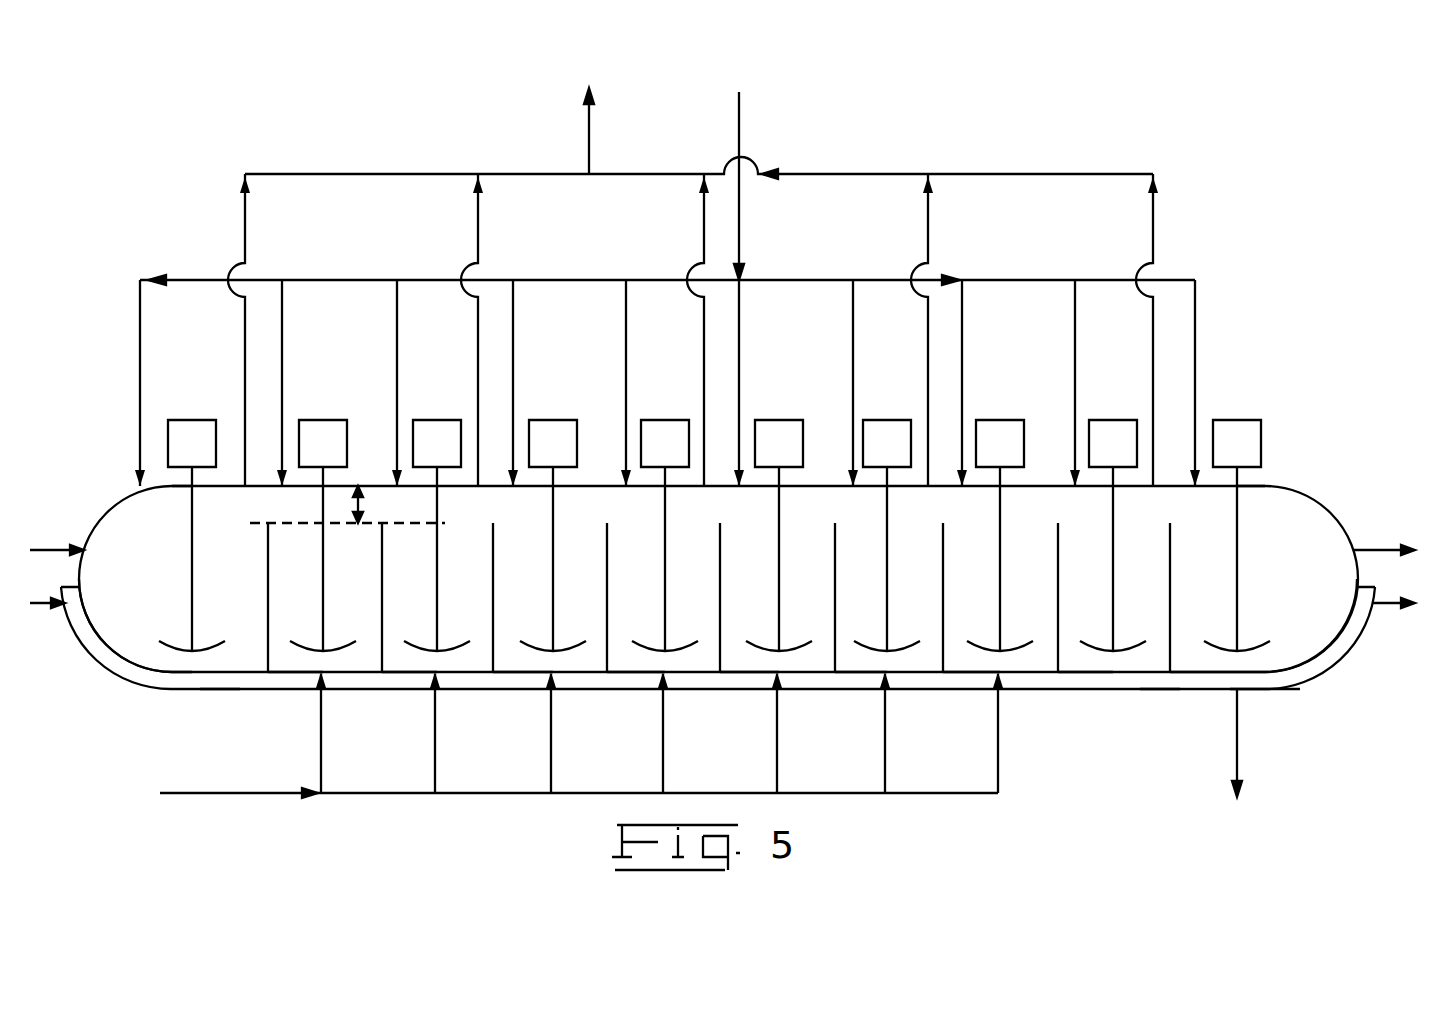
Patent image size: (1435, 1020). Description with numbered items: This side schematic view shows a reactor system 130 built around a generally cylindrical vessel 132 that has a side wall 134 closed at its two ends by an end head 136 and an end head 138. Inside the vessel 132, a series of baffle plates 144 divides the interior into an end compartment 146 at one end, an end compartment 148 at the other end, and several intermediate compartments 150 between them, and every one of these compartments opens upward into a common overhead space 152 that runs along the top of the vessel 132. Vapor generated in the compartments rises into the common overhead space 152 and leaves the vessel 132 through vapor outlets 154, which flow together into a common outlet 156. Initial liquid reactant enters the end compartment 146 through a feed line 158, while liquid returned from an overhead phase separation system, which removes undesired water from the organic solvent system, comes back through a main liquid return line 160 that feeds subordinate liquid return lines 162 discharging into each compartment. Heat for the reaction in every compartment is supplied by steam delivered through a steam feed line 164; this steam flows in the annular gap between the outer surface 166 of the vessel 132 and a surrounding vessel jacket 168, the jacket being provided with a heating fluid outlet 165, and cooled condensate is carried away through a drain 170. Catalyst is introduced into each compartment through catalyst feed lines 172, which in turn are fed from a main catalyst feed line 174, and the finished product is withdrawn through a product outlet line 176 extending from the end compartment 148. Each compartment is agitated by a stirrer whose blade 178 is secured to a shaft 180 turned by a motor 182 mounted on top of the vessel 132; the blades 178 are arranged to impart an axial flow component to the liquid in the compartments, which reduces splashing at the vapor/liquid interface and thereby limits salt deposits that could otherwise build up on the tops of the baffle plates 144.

The reactor system 130 is at (1108, 112).
The vessel 132 is at (1030, 486).
The side wall 134 is at (1280, 692).
The end head 136 is at (150, 662).
The end head 138 is at (1318, 638).
The baffle plates 144 is at (1170, 601).
The end compartment 146 is at (166, 597).
The end compartment 148 is at (1318, 599).
The intermediate compartments 150 is at (1222, 597).
The common overhead space 152 is at (358, 481).
The vapor outlets 154 is at (1197, 216).
The common outlet 156 is at (589, 130).
The feed line 158 is at (72, 548).
The main liquid return line 160 is at (739, 128).
The subordinate liquid return lines 162 is at (1217, 326).
The steam feed line 164 is at (45, 612).
The heating fluid outlet 165 is at (1364, 664).
The outer surface 166 is at (243, 689).
The vessel jacket 168 is at (222, 690).
The drain 170 is at (1234, 750).
The catalyst feed lines 172 is at (1022, 774).
The main catalyst feed line 174 is at (258, 795).
The product outlet line 176 is at (1360, 548).
The blade 178 is at (1250, 648).
The shaft 180 is at (1255, 516).
The motor 182 is at (1241, 420).